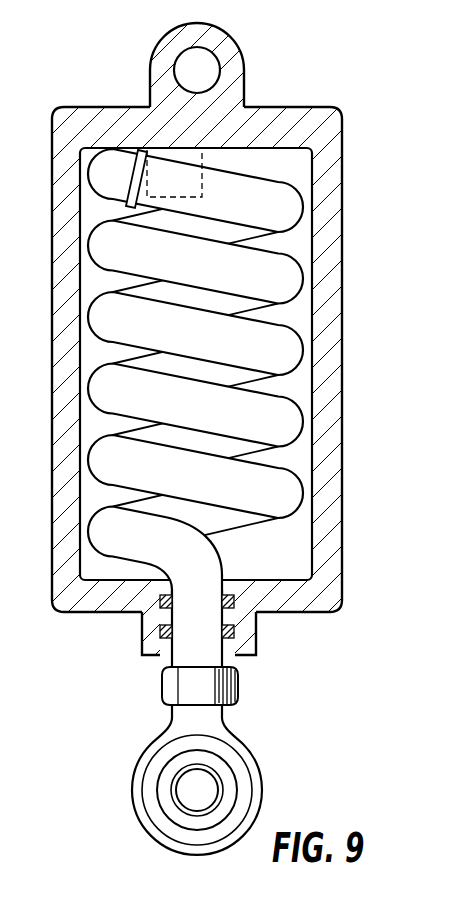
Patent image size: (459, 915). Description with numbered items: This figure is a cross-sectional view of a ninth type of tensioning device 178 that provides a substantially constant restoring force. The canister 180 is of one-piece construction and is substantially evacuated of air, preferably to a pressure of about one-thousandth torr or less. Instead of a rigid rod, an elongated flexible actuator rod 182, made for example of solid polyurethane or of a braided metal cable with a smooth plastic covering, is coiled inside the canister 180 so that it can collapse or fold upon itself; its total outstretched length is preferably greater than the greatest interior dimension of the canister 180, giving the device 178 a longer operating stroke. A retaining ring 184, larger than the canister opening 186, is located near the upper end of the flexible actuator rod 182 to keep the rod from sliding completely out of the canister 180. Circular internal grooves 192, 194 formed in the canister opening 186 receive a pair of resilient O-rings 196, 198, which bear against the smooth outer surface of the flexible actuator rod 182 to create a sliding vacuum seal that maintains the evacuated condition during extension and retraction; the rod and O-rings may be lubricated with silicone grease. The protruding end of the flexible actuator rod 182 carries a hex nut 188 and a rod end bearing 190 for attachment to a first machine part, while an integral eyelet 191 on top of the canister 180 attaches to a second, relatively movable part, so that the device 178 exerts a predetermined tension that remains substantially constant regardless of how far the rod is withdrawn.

The tensioning device 178 is at (274, 694).
The canister 180 is at (60, 494).
The flexible actuator rod 182 is at (102, 378).
The retaining ring 184 is at (141, 170).
The canister opening 186 is at (142, 628).
The hex nut 188 is at (168, 692).
The rod end bearing 190 is at (247, 790).
The eyelet 191 is at (155, 49).
The circular internal groove 192 is at (160, 637).
The circular internal groove 194 is at (160, 601).
The O-ring 196 is at (235, 637).
The O-ring 198 is at (235, 604).